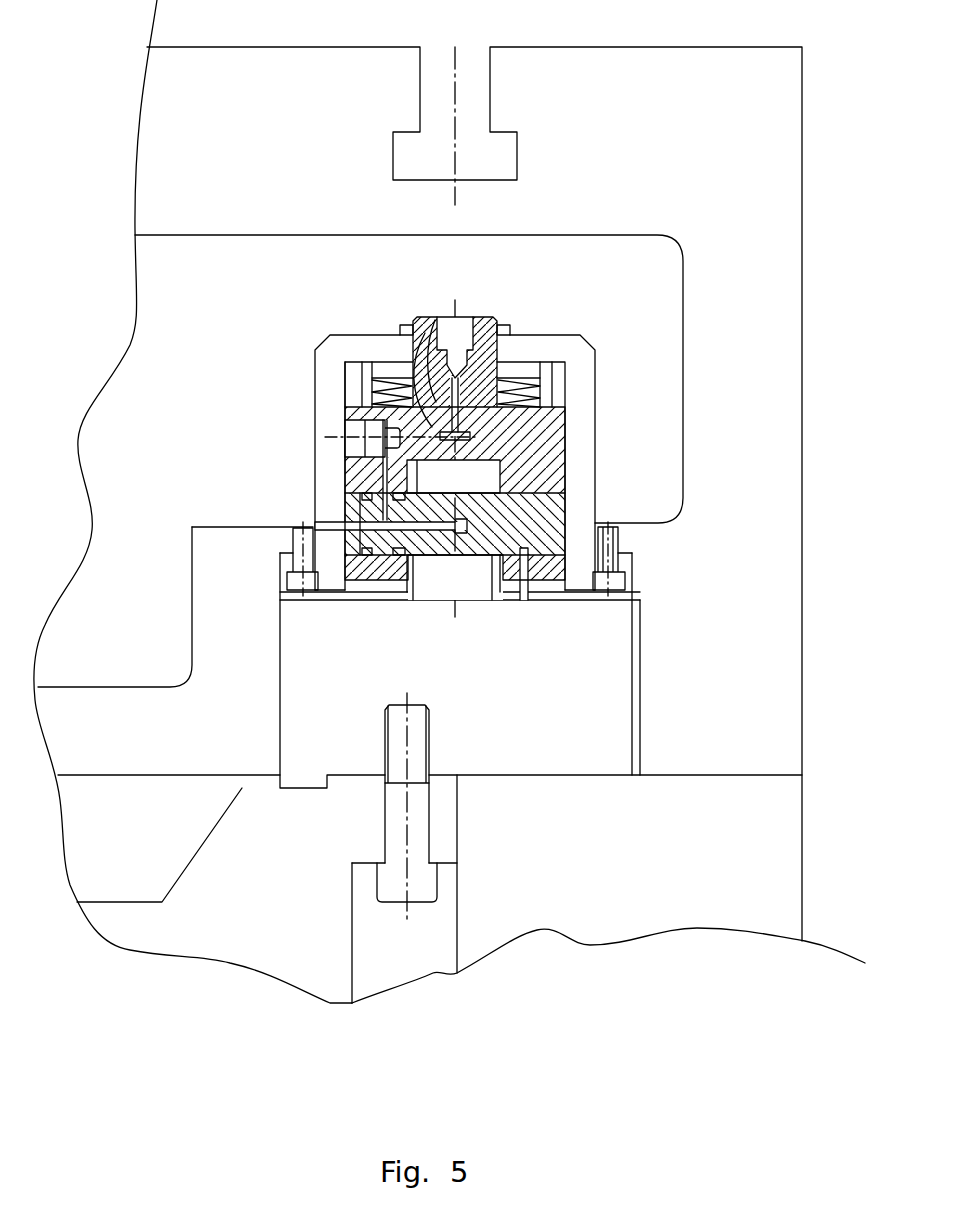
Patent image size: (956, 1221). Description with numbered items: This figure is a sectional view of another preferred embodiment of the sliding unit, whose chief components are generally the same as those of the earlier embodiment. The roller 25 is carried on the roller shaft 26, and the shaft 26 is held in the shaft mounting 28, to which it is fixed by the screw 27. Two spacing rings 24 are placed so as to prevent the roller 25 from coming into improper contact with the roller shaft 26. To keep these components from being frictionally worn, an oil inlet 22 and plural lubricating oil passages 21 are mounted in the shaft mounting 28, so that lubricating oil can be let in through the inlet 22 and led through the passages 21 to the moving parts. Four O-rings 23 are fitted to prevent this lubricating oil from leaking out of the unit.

The lubricating oil passages 21 is at (425, 335).
The oil inlet 22 is at (465, 328).
The O-rings 23 is at (358, 552).
The spacing rings 24 is at (413, 600).
The roller 25 is at (430, 471).
The roller shaft 26 is at (547, 510).
The screw 27 is at (530, 572).
The shaft mounting 28 is at (560, 420).